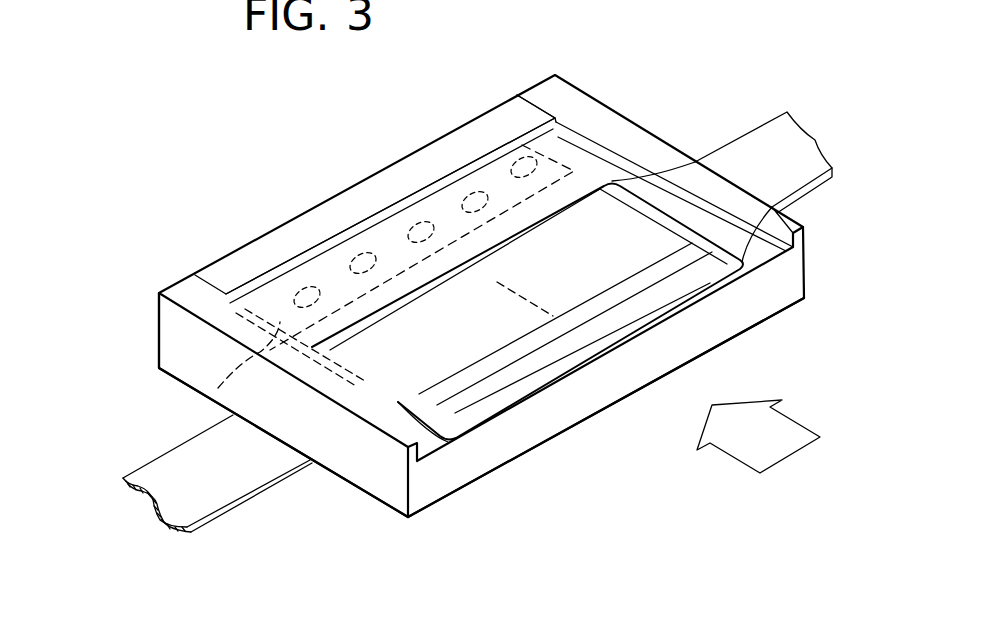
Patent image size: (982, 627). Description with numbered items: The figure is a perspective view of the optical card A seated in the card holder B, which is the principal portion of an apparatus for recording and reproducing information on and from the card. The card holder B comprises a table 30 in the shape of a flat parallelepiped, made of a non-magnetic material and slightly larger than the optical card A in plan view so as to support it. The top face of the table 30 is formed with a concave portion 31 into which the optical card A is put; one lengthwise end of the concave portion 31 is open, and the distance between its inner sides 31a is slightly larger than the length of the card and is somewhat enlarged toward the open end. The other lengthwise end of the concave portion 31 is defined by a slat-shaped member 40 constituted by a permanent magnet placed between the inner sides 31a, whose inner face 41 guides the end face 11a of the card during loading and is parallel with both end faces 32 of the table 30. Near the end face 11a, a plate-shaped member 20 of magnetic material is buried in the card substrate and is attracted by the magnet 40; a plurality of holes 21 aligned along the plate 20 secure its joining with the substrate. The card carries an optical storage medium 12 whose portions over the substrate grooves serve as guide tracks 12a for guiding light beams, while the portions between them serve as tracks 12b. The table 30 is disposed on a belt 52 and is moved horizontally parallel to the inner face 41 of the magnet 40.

The table 30 is at (455, 468).
The end faces 32 is at (158, 343).
The magnet 40 is at (502, 130).
The inner face 41 is at (548, 123).
The end face 11a is at (318, 252).
The optical storage medium 12 is at (640, 190).
The guide tracks 12a is at (603, 288).
The tracks 12b is at (658, 262).
The plate-shaped member 20 is at (233, 370).
The holes 21 is at (277, 278).
The concave portion 31 is at (778, 255).
The inner sides 31a is at (793, 212).
The belt 52 is at (223, 473).
The optical card A is at (580, 170).
The card holder B is at (505, 466).